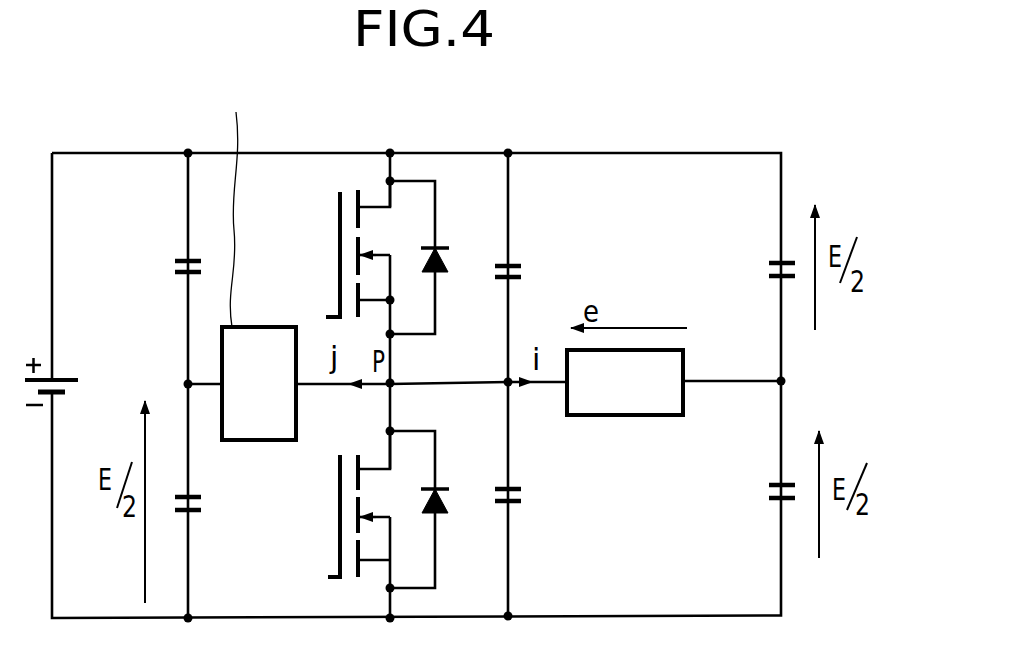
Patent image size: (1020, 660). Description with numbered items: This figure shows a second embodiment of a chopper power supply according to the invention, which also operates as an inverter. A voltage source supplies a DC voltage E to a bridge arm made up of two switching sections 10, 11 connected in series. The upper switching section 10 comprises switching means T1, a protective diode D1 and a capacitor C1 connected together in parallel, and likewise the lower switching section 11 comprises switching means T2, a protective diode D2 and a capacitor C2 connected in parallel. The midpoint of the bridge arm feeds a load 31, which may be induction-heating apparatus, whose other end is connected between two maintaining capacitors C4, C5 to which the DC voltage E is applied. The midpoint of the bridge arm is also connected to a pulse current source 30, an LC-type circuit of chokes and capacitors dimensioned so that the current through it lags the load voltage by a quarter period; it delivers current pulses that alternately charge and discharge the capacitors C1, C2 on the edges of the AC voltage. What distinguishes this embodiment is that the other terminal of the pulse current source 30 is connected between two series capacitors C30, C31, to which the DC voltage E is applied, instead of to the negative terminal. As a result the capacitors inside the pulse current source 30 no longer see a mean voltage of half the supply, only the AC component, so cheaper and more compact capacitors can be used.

The DC voltage E is at (71, 376).
The capacitor C30 is at (177, 262).
The capacitor C31 is at (203, 512).
The pulse current source 30 is at (253, 340).
The switching means T1 is at (337, 232).
The switching means T2 is at (342, 527).
The protective diode D1 is at (437, 250).
The protective diode D2 is at (448, 503).
The capacitor C1 is at (520, 281).
The capacitor C2 is at (521, 500).
The switching section 10 is at (527, 227).
The switching section 11 is at (540, 591).
The load 31 is at (630, 398).
The maintaining capacitor C4 is at (768, 279).
The maintaining capacitor C5 is at (773, 501).